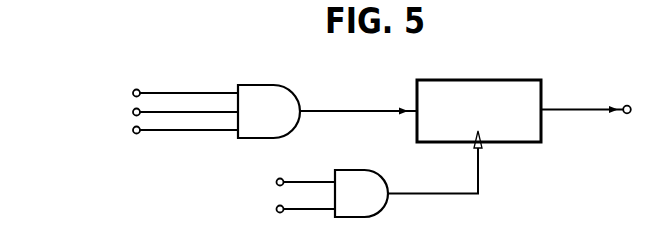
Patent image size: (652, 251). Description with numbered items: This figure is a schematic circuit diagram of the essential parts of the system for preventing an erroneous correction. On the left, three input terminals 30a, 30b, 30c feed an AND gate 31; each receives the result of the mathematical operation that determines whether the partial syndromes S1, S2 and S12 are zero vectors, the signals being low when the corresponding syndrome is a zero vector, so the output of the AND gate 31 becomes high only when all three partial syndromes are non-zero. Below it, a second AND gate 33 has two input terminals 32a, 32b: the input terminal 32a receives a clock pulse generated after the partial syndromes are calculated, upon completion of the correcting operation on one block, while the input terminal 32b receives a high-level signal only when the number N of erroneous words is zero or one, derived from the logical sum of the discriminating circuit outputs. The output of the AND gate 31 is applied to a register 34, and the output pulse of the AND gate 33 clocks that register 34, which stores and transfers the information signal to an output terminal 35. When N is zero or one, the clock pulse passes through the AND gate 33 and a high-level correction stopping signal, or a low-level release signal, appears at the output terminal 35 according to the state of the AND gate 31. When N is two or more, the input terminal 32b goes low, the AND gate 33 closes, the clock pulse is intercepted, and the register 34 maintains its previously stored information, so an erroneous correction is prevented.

The input terminal 30a is at (136, 89).
The input terminal 30b is at (133, 112).
The input terminal 30c is at (136, 134).
The AND gate 31 is at (262, 85).
The input terminal 32a is at (276, 182).
The input terminal 32b is at (278, 212).
The AND gate 33 is at (363, 170).
The register 34 is at (470, 80).
The output terminal 35 is at (628, 105).